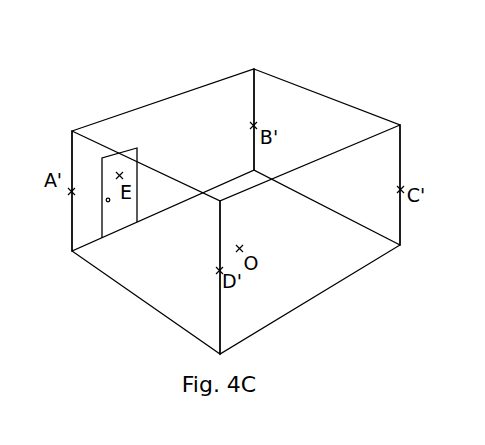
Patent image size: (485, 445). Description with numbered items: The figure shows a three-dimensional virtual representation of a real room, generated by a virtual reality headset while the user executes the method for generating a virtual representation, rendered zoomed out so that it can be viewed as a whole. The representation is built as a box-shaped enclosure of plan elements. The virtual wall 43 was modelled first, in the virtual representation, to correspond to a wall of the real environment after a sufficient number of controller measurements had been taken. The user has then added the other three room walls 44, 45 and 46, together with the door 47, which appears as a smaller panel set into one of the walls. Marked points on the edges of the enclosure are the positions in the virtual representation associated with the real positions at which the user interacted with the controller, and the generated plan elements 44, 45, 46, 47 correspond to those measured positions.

The virtual wall 43 is at (168, 115).
The room wall 44 is at (330, 120).
The room wall 45 is at (307, 278).
The room wall 46 is at (120, 257).
The door 47 is at (107, 160).